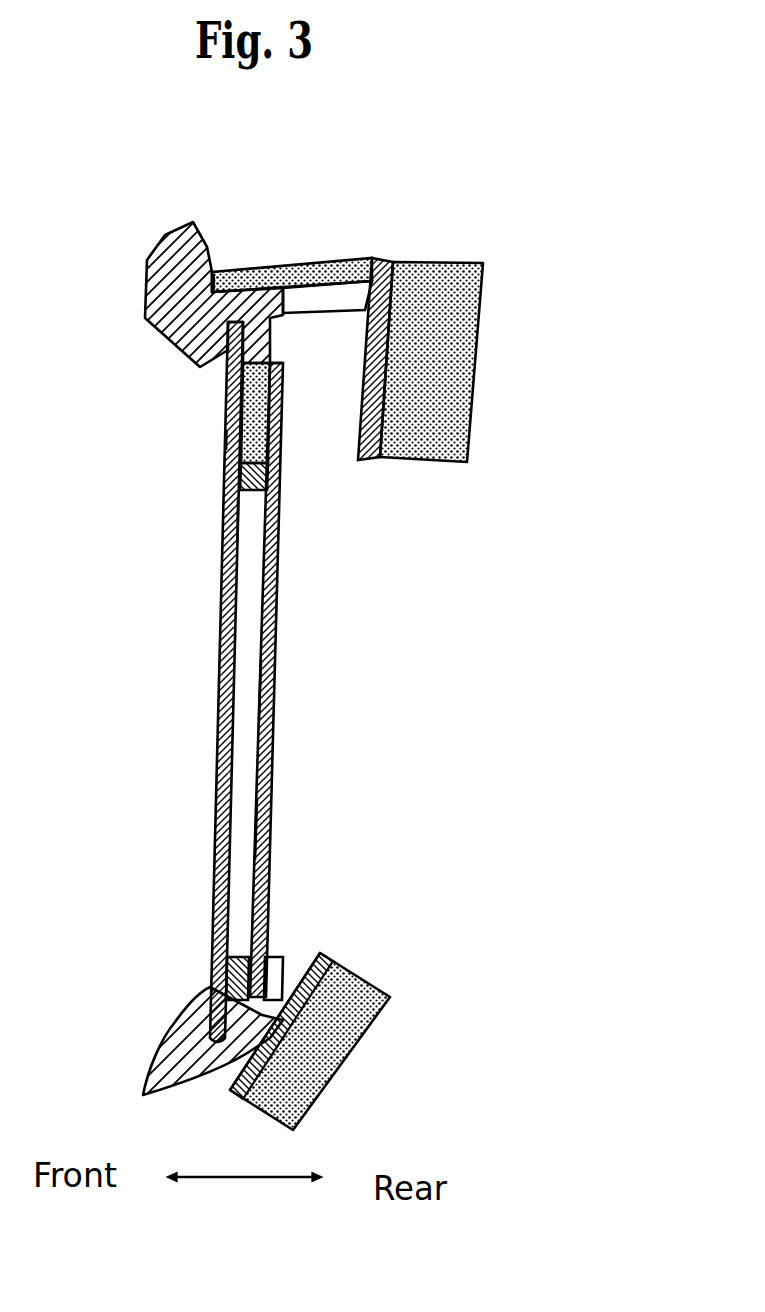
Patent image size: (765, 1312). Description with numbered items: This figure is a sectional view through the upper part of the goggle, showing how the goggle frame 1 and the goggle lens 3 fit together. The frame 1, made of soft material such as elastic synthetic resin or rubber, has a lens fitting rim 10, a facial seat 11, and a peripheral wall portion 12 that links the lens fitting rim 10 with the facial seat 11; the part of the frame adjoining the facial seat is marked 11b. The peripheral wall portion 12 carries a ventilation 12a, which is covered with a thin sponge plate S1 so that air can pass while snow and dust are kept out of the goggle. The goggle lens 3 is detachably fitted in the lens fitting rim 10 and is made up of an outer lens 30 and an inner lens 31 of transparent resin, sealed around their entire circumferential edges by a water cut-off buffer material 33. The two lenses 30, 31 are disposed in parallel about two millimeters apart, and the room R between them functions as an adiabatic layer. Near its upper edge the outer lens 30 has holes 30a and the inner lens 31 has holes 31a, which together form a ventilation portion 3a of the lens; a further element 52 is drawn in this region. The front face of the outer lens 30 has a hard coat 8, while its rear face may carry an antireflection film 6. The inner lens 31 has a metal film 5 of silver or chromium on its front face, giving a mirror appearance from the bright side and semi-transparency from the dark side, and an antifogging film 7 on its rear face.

The goggle frame 1 is at (154, 206).
The sponge plate S1 is at (222, 275).
The peripheral wall portion 12 is at (264, 277).
The ventilation 12a is at (327, 267).
The facial seat 11 is at (380, 260).
The cushion block 11b is at (447, 257).
The lens fitting rim 10 is at (228, 378).
The holes 30a is at (230, 420).
The ventilation portion 3a is at (217, 439).
The stopper block 52 is at (247, 467).
The water cut-off buffer material 33 is at (233, 523).
The holes 31a is at (283, 423).
The hard coat 8 is at (212, 604).
The metal film 5 is at (248, 659).
The goggle lens 3 is at (209, 745).
The room R is at (240, 850).
The antifogging film 7 is at (289, 623).
The outer lens 30 is at (267, 703).
The inner lens 31 is at (267, 837).
The antireflection film 6 is at (242, 789).